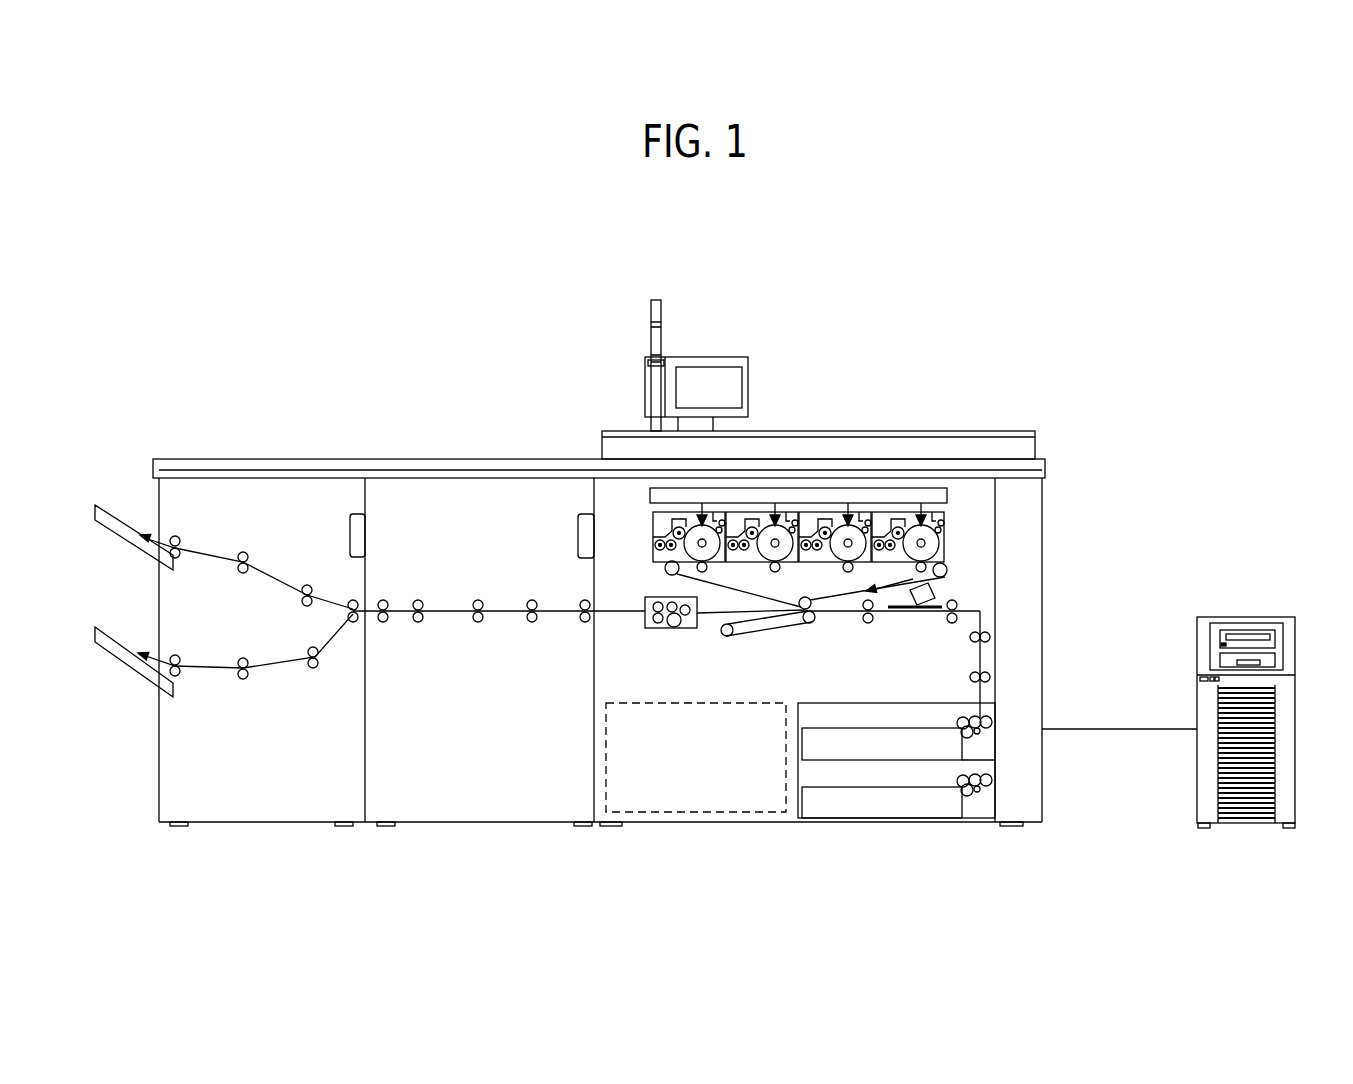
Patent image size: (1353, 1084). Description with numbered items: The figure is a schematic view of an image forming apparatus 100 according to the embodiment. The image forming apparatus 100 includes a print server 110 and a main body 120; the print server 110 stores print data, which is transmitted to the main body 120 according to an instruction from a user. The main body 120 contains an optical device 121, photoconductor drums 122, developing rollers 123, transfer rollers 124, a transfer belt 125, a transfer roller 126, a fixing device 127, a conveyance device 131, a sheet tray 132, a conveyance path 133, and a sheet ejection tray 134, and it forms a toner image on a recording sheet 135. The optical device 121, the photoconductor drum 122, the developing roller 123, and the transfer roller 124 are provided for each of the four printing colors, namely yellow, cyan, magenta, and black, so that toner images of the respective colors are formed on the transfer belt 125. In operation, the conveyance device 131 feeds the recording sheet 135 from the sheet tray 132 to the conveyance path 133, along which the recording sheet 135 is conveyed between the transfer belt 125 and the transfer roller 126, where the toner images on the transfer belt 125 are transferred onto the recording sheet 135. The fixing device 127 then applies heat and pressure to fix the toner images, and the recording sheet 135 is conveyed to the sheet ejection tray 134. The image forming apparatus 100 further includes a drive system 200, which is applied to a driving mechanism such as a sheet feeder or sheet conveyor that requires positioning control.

The image forming apparatus 100 is at (1187, 296).
The print server 110 is at (1240, 617).
The main body 120 is at (1043, 499).
The optical device 121 is at (947, 497).
The photoconductor drum 122 is at (940, 544).
The developing roller 123 is at (672, 531).
The transfer roller 124 is at (784, 563).
The transfer belt 125 is at (758, 600).
The transfer roller 126 is at (813, 619).
The fixing device 127 is at (646, 600).
The conveyance device 131 is at (987, 722).
The sheet tray 132 is at (874, 728).
The conveyance path 133 is at (982, 623).
The sheet ejection tray 134 is at (113, 516).
The recording sheet 135 is at (938, 606).
The drive system 200 is at (735, 812).